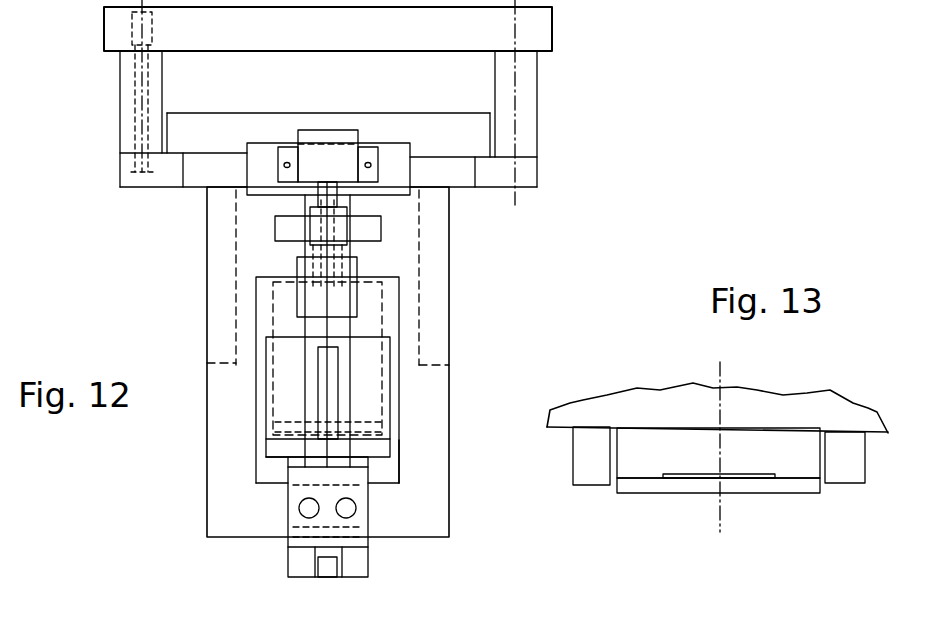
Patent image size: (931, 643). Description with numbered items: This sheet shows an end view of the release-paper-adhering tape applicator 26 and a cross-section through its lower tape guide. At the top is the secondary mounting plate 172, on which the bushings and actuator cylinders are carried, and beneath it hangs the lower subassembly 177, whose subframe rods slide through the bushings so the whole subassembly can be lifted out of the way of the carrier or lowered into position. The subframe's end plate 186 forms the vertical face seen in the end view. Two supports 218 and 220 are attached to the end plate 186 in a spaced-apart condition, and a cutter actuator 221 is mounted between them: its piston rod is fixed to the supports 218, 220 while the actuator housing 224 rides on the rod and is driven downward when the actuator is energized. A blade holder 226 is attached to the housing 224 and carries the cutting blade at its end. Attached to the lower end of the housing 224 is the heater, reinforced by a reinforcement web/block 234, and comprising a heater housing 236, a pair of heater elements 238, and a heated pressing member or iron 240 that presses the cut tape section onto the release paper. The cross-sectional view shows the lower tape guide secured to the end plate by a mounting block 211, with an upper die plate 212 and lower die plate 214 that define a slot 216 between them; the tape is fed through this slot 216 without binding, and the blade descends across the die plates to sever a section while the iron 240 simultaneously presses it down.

In FIG. 12, the secondary mounting plate 172 is at (552, 27).
In FIG. 12, the release-paper-adhering tape applicator 26 is at (627, 123).
In FIG. 12, the lower subassembly 177 is at (206, 227).
In FIG. 12, the end plate 186 is at (206, 424).
In FIG. 12, the support 218 is at (273, 230).
In FIG. 12, the cutter actuator 221 is at (357, 302).
In FIG. 12, the actuator housing 224 is at (273, 319).
In FIG. 12, the reinforcement web/block 234 is at (338, 403).
In FIG. 12, the blade holder 226 is at (400, 450).
In FIG. 12, the support 220 is at (283, 458).
In FIG. 12, the heater housing 236 is at (363, 515).
In FIG. 12, the heater elements 238 is at (347, 503).
In FIG. 12, the heated pressing member or iron 240 is at (296, 578).
In FIG. 13, the mounting block 211 is at (787, 390).
In FIG. 13, the upper die plate 212 is at (647, 433).
In FIG. 13, the lower die plate 214 is at (625, 492).
In FIG. 13, the slot 216 is at (680, 480).